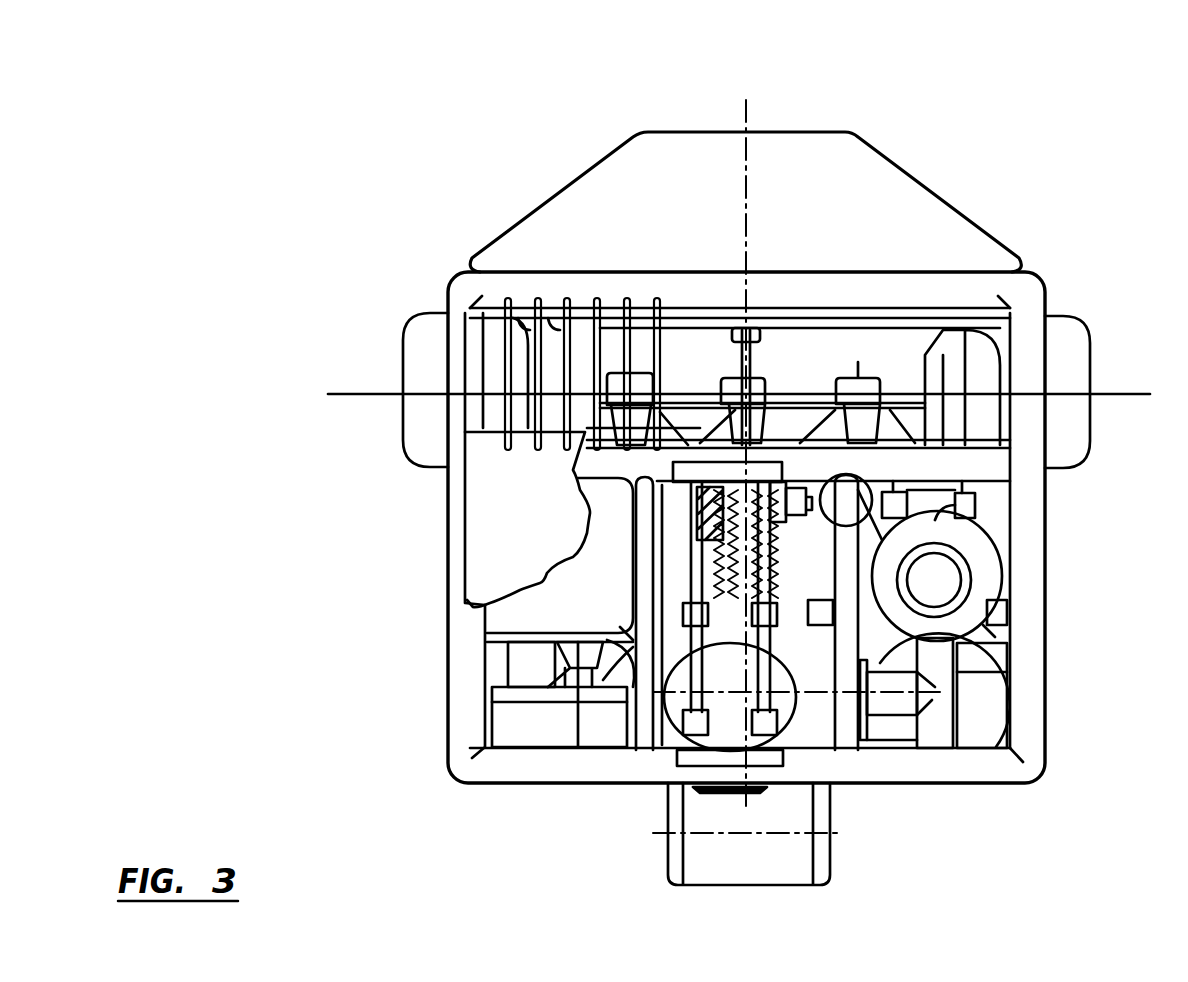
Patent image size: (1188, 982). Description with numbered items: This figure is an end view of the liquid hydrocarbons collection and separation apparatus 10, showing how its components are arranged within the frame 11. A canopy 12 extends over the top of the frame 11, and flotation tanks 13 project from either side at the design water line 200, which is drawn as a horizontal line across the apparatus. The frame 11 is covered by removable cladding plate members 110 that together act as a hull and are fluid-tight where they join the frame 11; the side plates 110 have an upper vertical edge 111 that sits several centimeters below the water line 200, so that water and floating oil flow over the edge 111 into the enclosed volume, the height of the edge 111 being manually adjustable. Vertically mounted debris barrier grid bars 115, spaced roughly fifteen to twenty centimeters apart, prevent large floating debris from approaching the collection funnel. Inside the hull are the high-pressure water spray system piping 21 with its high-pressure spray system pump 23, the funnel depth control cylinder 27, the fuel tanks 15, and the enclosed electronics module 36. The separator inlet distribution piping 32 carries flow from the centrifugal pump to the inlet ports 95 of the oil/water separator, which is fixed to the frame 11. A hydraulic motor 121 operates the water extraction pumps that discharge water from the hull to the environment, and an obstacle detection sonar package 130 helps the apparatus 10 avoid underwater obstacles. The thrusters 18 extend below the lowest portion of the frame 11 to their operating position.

The liquid hydrocarbons collection and separation apparatus 10 is at (926, 157).
The frame 11 is at (1044, 273).
The canopy 12 is at (563, 186).
The flotation tanks 13 is at (403, 342).
The fuel tanks 15 is at (610, 552).
The thrusters 18 is at (667, 817).
The high-pressure water spray system piping 21 is at (878, 318).
The high-pressure spray system pump 23 is at (1010, 520).
The funnel depth control cylinder 27 is at (757, 357).
The separator inlet distribution piping 32 is at (968, 722).
The enclosed electronics module 36 is at (487, 718).
The inlet ports 95 is at (957, 660).
The cladding plate members 110 is at (465, 516).
The upper vertical edge 111 is at (552, 433).
The debris barrier grid bars 115 is at (660, 350).
The hydraulic motor 121 is at (487, 653).
The obstacle detection sonar package 130 is at (1010, 608).
The design water line 200 is at (358, 395).